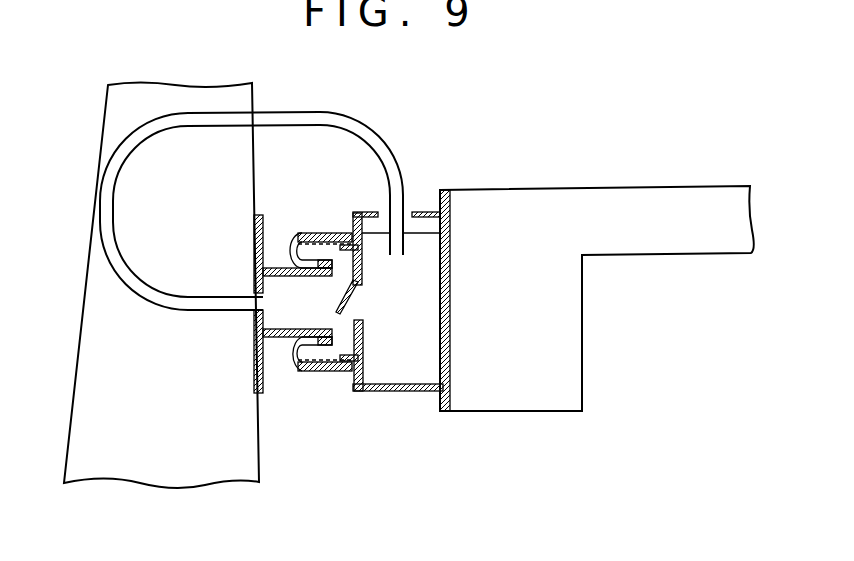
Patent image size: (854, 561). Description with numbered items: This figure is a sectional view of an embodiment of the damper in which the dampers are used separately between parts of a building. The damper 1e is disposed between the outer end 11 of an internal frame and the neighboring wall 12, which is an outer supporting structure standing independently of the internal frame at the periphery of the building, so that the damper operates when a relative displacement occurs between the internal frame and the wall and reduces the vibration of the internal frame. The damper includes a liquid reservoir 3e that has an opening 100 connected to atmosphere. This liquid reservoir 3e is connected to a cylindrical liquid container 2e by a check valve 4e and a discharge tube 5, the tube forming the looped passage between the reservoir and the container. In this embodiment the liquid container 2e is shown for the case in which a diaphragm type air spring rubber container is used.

The discharge tube 5 is at (162, 134).
The neighboring wall 12 is at (181, 414).
The outer end of internal frame 11 is at (526, 309).
The opening 100 is at (376, 305).
The damper 1e is at (364, 403).
The liquid container 2e is at (328, 352).
The liquid reservoir 3e is at (415, 393).
The check valve 4e is at (340, 280).